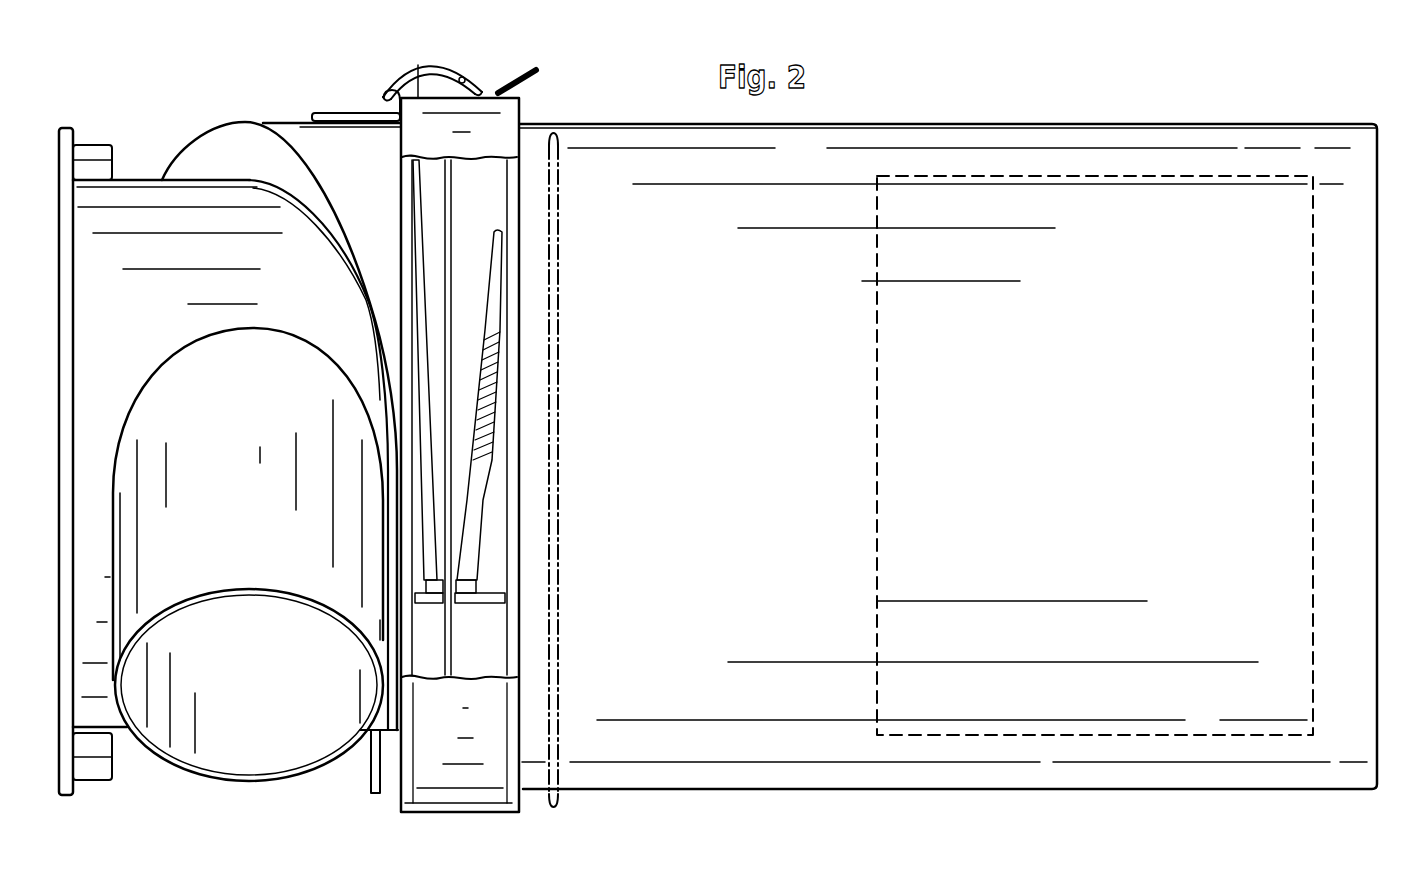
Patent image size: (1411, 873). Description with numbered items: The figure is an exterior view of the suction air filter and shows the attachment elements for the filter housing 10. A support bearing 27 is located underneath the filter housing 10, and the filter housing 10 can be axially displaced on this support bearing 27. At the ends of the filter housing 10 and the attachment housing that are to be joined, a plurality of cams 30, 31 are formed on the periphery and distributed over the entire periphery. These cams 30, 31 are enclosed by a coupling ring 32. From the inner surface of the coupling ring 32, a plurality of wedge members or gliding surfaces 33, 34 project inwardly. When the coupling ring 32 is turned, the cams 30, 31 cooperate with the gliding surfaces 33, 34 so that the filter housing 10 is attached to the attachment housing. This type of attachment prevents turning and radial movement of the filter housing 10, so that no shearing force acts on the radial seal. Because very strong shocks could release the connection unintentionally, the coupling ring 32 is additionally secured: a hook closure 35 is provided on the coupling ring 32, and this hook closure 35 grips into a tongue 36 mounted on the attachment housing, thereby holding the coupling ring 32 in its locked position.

The filter housing 10 is at (1125, 133).
The support bearing 27 is at (1042, 197).
The cam 30 is at (460, 519).
The cam 31 is at (436, 513).
The coupling ring 32 is at (487, 797).
The wedge member or gliding surface 33 is at (455, 582).
The wedge member or gliding surface 34 is at (430, 582).
The hook closure 35 is at (458, 72).
The tongue 36 is at (351, 112).